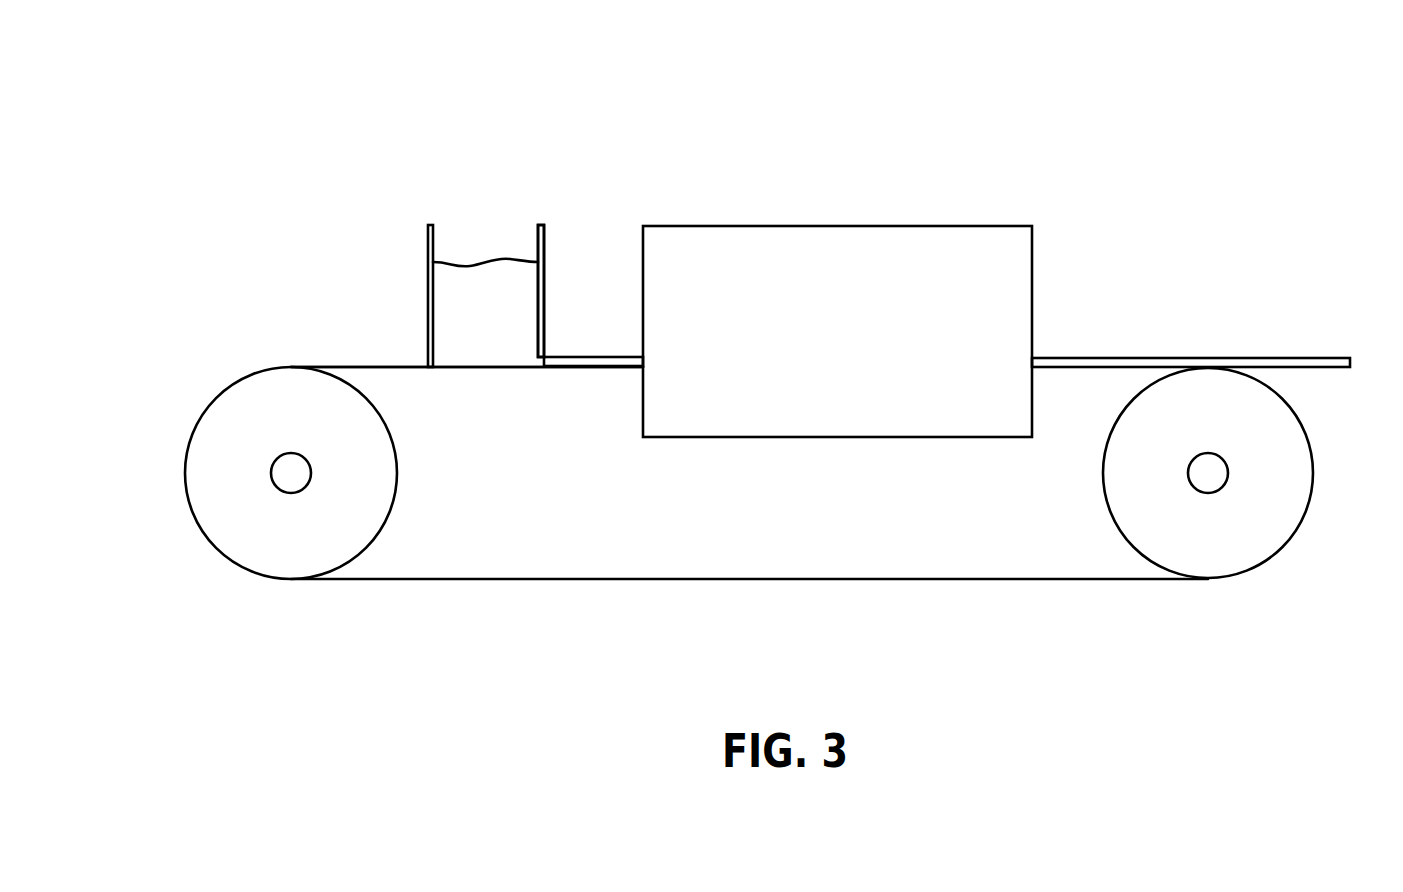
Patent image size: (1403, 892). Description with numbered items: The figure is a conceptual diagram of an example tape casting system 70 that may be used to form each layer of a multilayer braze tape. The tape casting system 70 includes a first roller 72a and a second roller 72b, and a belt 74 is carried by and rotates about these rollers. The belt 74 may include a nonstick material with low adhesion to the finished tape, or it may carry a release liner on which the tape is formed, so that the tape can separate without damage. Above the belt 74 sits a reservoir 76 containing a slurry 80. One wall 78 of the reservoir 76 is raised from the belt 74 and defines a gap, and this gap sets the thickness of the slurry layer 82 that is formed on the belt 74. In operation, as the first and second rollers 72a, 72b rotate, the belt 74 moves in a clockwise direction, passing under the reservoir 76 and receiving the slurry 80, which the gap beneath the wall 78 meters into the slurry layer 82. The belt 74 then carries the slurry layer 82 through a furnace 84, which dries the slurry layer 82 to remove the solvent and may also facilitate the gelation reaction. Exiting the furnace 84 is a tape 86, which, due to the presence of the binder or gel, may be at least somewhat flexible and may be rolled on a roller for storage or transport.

The tape casting system 70 is at (264, 148).
The first roller 72a is at (212, 468).
The second roller 72b is at (1287, 472).
The belt 74 is at (345, 367).
The reservoir 76 is at (424, 205).
The wall 78 is at (542, 308).
The slurry 80 is at (445, 340).
The slurry layer 82 is at (600, 362).
The furnace 84 is at (768, 240).
The tape 86 is at (1137, 360).